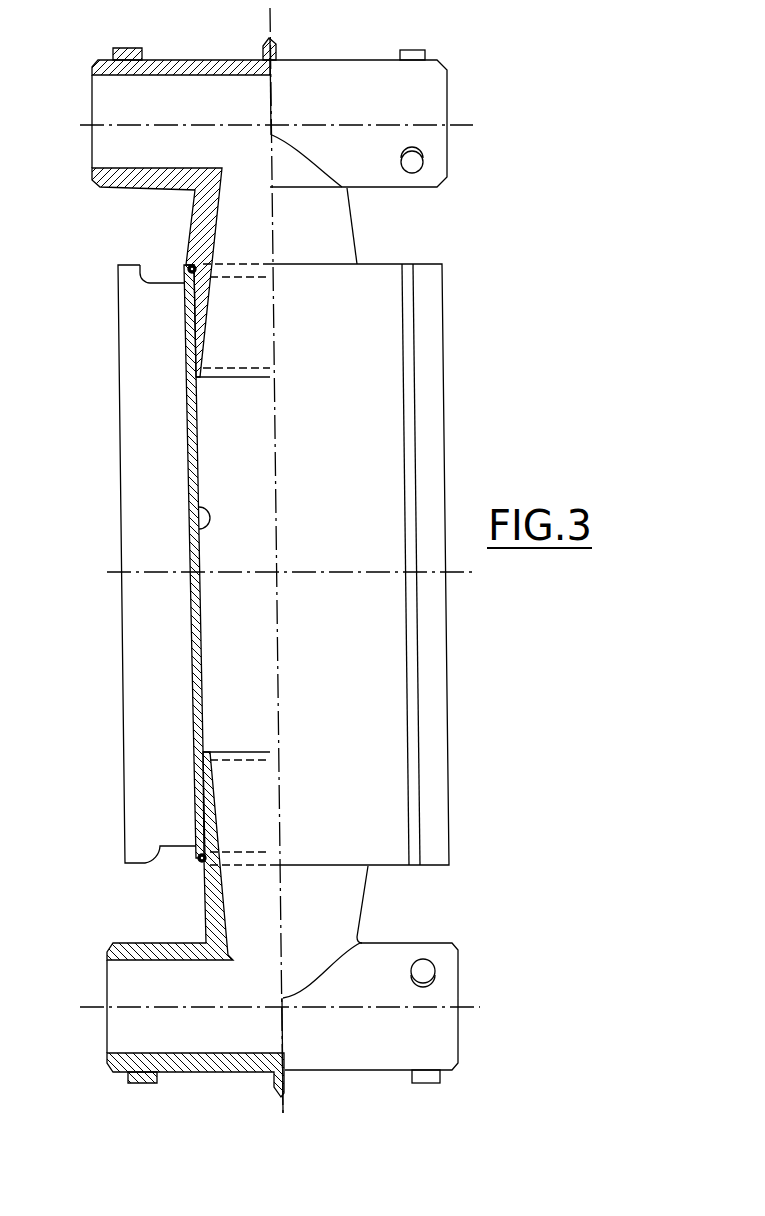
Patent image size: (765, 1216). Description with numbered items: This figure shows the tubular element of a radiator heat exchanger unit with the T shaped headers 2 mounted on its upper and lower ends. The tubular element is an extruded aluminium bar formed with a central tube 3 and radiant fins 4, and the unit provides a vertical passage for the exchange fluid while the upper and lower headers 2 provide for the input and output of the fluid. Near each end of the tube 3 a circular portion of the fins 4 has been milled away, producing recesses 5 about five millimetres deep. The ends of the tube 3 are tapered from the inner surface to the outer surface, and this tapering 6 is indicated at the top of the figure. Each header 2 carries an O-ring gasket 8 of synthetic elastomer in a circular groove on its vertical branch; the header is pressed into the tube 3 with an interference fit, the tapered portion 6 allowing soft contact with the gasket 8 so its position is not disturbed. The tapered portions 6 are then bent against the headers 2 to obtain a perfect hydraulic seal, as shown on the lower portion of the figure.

The T shaped header 2 is at (347, 83).
The tube 3 is at (190, 527).
The radiant fins 4 is at (133, 422).
The recess 5 is at (148, 280).
The tapering 6 is at (187, 262).
The O-ring gasket 8 is at (195, 858).